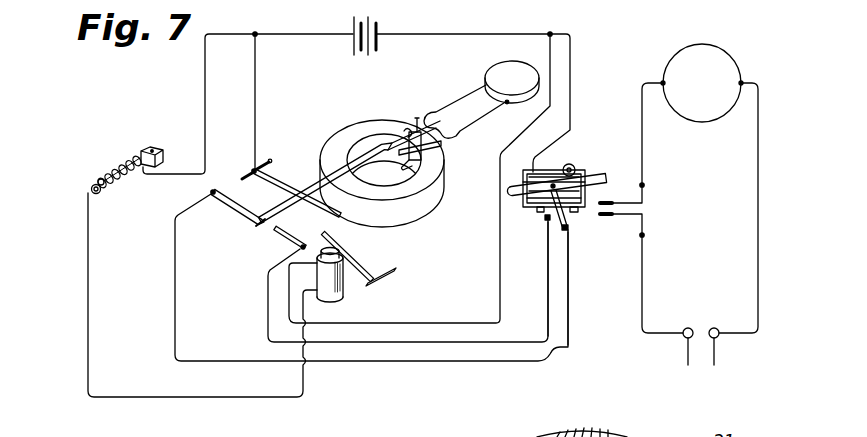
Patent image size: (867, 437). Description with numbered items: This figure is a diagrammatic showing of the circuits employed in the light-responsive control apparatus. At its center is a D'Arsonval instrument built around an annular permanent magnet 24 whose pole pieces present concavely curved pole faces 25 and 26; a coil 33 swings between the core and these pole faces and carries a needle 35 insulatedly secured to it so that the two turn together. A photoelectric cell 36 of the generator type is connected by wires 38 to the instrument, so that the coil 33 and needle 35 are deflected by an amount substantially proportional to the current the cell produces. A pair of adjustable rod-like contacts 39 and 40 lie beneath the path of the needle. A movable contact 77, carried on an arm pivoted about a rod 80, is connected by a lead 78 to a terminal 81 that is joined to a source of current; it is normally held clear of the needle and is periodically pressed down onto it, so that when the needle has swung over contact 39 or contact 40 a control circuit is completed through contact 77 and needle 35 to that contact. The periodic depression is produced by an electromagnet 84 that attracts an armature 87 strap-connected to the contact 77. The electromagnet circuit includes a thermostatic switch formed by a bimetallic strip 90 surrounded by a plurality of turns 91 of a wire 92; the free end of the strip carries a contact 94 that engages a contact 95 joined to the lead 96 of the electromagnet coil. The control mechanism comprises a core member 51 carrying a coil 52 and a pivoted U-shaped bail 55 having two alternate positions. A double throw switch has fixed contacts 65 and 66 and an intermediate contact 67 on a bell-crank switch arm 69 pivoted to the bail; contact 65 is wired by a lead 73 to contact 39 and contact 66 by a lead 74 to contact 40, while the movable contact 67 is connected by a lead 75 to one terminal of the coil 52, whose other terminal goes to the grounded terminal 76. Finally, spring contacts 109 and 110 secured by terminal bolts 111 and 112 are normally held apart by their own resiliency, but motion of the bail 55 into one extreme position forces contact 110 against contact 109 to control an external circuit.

The permanent magnet 24 is at (428, 204).
The pole face 25 is at (434, 155).
The pole face 26 is at (404, 133).
The coil 33 is at (408, 164).
The needle 35 is at (317, 186).
The photoelectric cell 36 is at (489, 78).
The wires 38 is at (454, 108).
The contact 39 is at (238, 215).
The contact 40 is at (281, 237).
The core member 51 is at (586, 193).
The coil 52 is at (543, 173).
The bail 55 is at (591, 177).
The contact 65 is at (543, 227).
The contact 66 is at (570, 227).
The contact 67 is at (563, 231).
The switch arm 69 is at (553, 231).
The lead 73 is at (546, 297).
The lead 74 is at (569, 298).
The lead 75 is at (573, 165).
The grounded terminal 76 is at (550, 32).
The movable contact 77 is at (278, 189).
The lead 78 is at (257, 104).
The rod 80 is at (264, 167).
The terminal 81 is at (256, 32).
The electromagnet 84 is at (344, 291).
The armature 87 is at (348, 243).
The bimetallic strip 90 is at (148, 150).
The turns 91 is at (116, 172).
The wire 92 is at (125, 178).
The contact 94 is at (100, 179).
The contact 95 is at (91, 189).
The lead 96 is at (88, 294).
The spring contact 109 is at (606, 217).
The spring contact 110 is at (611, 202).
The terminal bolt 111 is at (644, 235).
The terminal bolt 112 is at (644, 185).